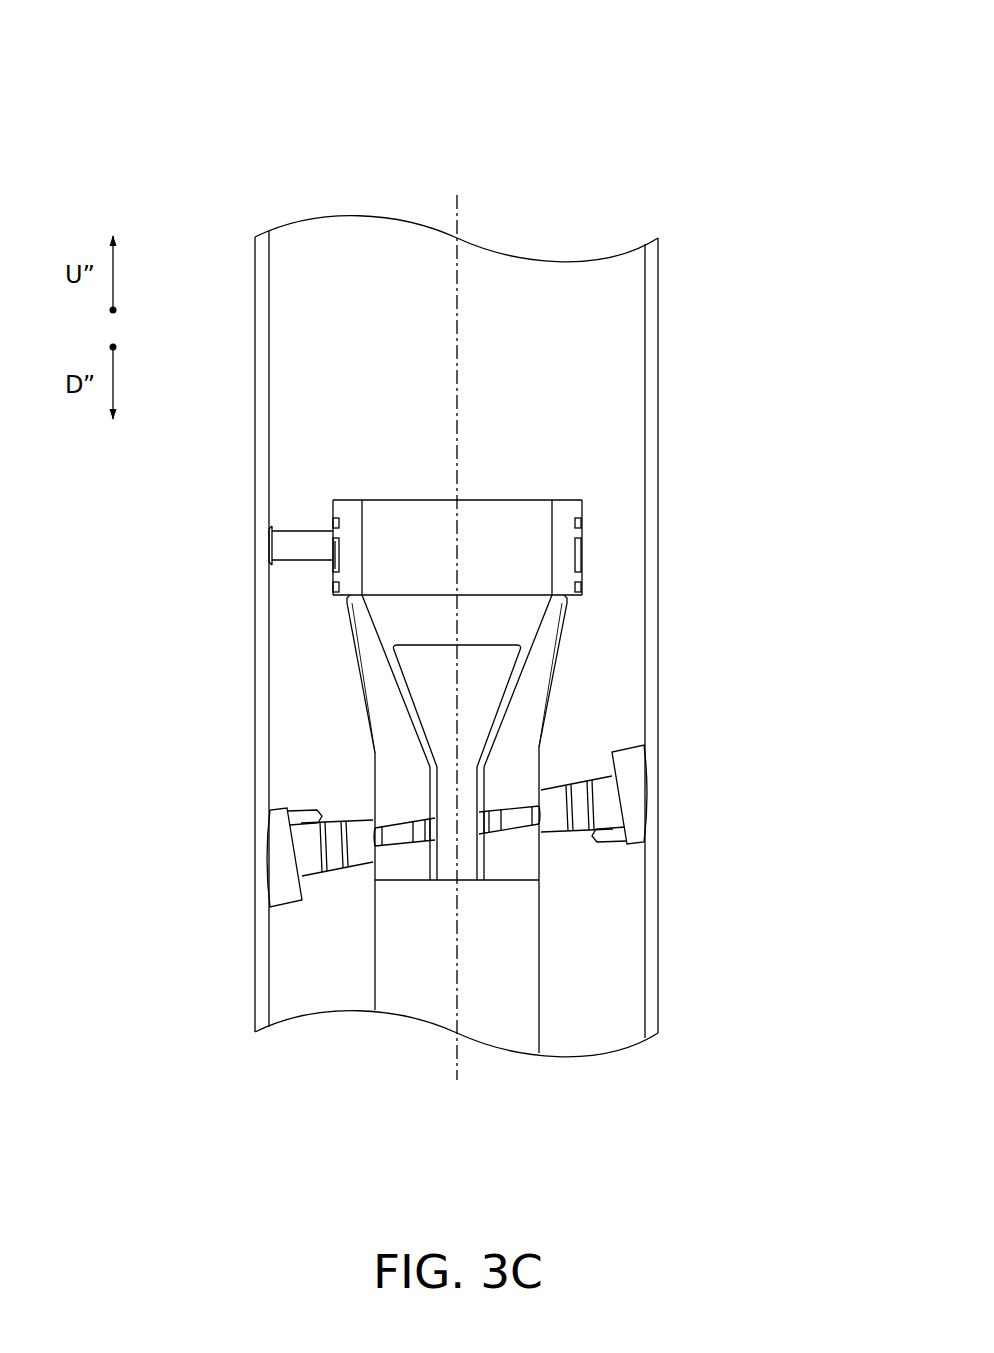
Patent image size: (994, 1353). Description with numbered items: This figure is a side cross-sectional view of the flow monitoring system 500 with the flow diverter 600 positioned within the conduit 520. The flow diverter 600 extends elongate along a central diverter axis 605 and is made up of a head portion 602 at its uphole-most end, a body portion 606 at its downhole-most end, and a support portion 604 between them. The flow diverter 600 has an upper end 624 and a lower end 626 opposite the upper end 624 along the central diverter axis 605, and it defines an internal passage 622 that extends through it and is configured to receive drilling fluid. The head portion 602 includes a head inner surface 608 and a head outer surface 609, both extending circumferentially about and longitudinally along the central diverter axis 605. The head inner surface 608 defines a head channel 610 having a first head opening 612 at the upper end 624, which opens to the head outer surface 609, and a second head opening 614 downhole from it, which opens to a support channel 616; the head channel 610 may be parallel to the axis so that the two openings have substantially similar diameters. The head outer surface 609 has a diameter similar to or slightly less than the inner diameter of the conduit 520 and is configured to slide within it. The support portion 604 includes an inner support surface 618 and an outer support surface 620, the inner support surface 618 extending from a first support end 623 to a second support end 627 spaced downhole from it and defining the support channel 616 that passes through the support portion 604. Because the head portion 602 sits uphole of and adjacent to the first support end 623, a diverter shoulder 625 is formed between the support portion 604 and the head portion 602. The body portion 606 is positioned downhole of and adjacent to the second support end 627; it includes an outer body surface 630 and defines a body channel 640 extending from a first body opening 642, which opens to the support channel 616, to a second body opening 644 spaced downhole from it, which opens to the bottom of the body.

The flow monitoring system 500 is at (481, 533).
The conduit 520 is at (300, 308).
The central diverter axis 605 is at (452, 215).
The flow diverter 600 is at (330, 569).
The head portion 602 is at (330, 522).
The support portion 604 is at (363, 690).
The body portion 606 is at (369, 804).
The head inner surface 608 is at (553, 521).
The head outer surface 609 is at (581, 523).
The head channel 610 is at (517, 541).
The first head opening 612 is at (523, 496).
The second head opening 614 is at (502, 591).
The support channel 616 is at (473, 697).
The inner support surface 618 is at (533, 650).
The outer support surface 620 is at (545, 728).
The internal passage 622 is at (433, 550).
The first support end 623 is at (554, 606).
The upper end 624 is at (331, 497).
The diverter shoulder 625 is at (333, 601).
The lower end 626 is at (376, 884).
The second support end 627 is at (541, 751).
The outer body surface 630 is at (545, 859).
The body channel 640 is at (440, 804).
The first body opening 642 is at (491, 781).
The second body opening 644 is at (481, 884).